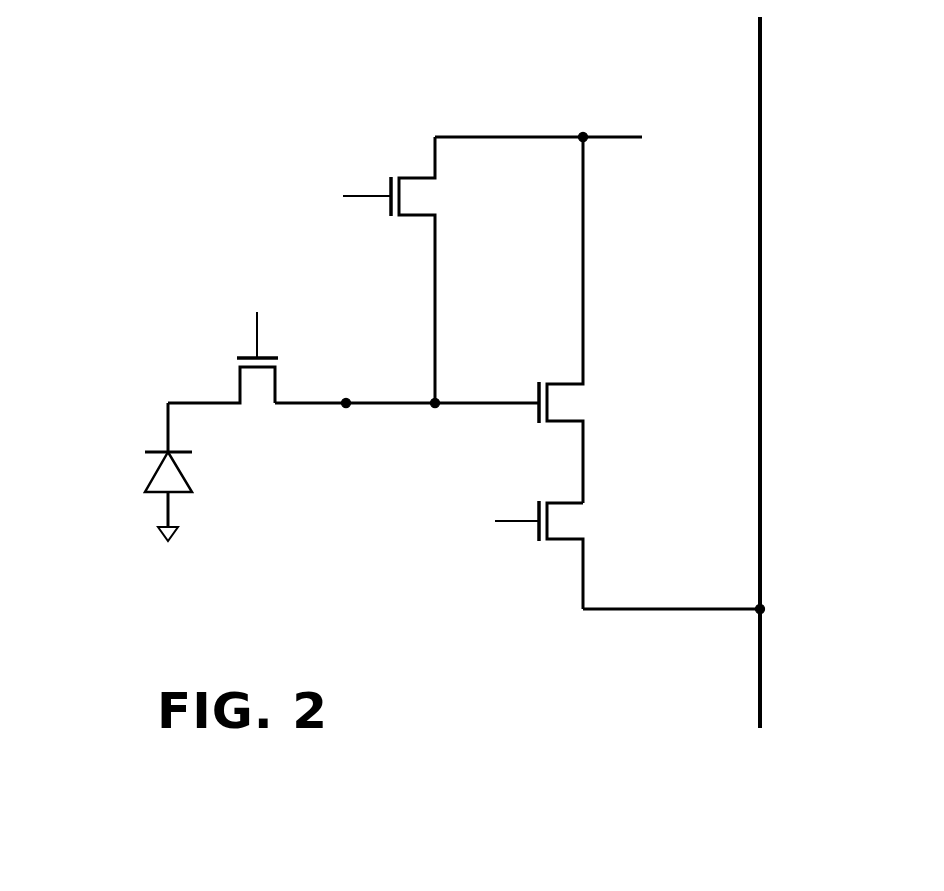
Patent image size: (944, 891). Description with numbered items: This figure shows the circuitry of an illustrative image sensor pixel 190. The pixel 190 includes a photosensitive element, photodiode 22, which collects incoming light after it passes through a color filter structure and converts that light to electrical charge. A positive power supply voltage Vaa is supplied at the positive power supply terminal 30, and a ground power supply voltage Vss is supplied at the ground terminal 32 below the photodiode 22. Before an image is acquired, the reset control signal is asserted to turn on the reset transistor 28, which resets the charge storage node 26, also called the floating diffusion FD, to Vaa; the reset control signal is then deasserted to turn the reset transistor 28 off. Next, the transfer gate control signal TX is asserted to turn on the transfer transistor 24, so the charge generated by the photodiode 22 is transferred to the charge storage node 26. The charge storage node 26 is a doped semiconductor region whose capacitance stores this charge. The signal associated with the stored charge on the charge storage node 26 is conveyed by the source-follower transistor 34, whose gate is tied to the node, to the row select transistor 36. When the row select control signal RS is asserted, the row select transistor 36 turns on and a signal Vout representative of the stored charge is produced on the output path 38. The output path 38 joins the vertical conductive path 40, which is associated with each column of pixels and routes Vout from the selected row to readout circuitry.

The pixel 190 is at (222, 124).
The photodiode 22 is at (160, 472).
The transfer transistor 24 is at (246, 386).
The charge storage node 26 is at (347, 400).
The reset transistor 28 is at (418, 177).
The positive power supply terminal 30 is at (618, 136).
The ground terminal 32 is at (160, 535).
The source-follower transistor 34 is at (566, 389).
The row select transistor 36 is at (565, 508).
The output path 38 is at (646, 612).
The vertical conductive path 40 is at (763, 445).